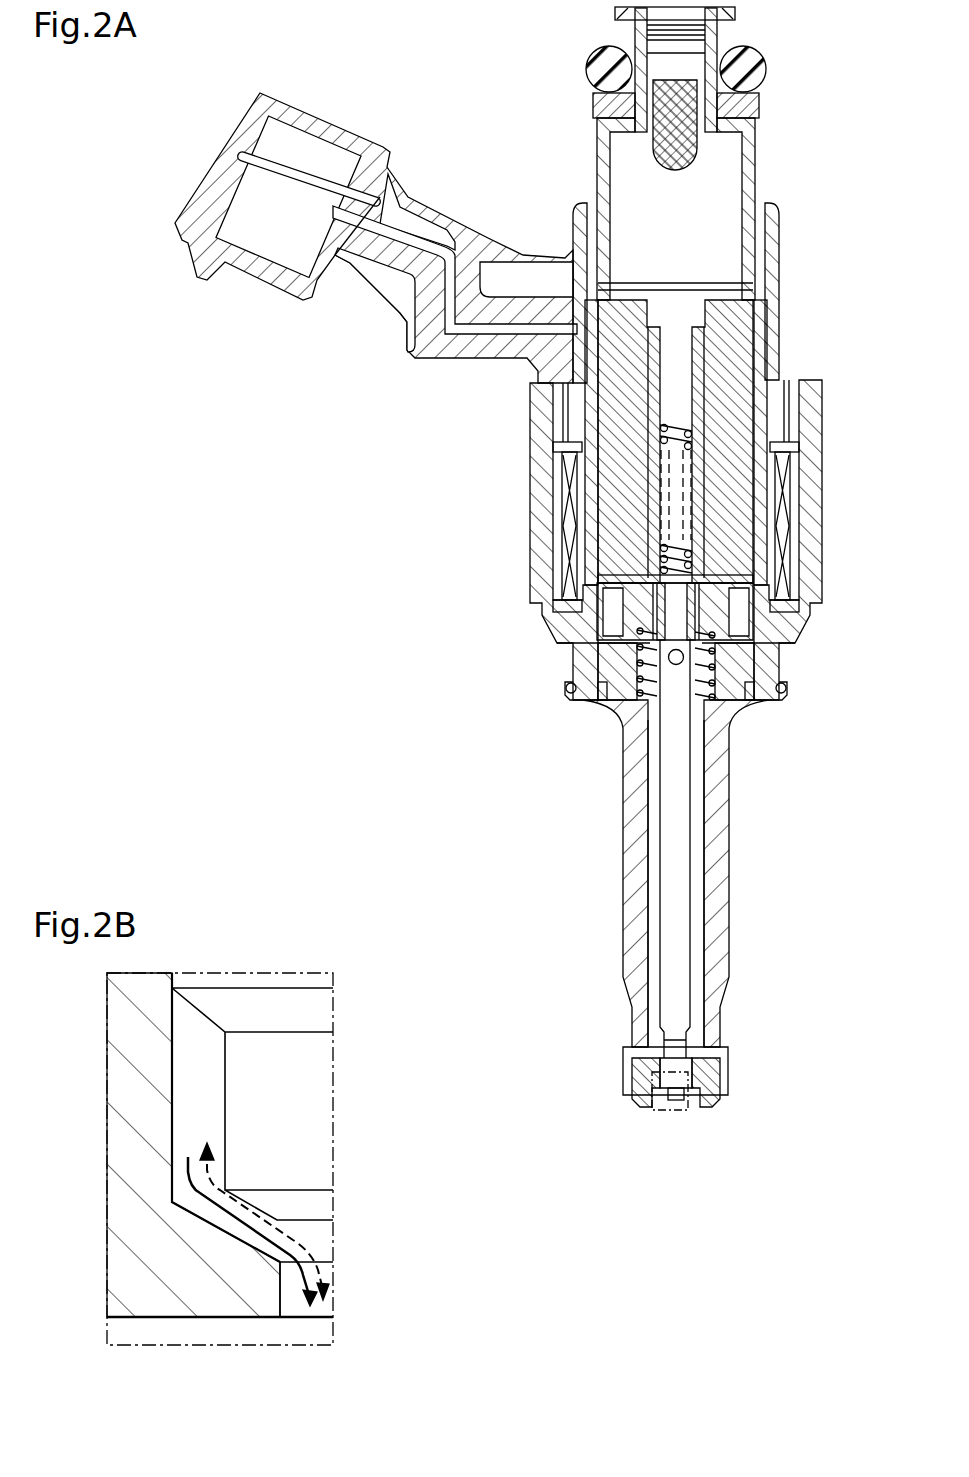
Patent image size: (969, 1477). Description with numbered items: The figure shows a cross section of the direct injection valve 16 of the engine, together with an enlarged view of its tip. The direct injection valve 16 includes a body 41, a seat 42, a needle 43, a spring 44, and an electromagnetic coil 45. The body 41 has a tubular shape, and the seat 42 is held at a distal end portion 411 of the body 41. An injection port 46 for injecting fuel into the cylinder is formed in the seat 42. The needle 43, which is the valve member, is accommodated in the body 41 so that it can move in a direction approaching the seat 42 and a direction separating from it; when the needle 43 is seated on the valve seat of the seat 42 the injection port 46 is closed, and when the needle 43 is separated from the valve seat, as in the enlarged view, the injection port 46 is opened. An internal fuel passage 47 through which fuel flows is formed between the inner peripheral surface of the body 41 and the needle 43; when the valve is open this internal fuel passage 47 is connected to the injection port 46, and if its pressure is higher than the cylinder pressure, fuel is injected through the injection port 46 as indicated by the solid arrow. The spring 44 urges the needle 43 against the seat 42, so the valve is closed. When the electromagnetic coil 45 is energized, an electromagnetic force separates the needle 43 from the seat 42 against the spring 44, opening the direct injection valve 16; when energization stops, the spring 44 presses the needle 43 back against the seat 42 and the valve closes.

In FIG. 2A, the direct injection valve 16 is at (533, 589).
In FIG. 2A, the body 41 is at (727, 768).
In FIG. 2A, the distal end portion 411 is at (622, 1090).
In FIG. 2A, the seat 42 is at (712, 1080).
In FIG. 2B, the seat 42 is at (126, 1135).
In FIG. 2A, the needle 43 is at (660, 933).
In FIG. 2A, the spring 44 is at (648, 548).
In FIG. 2A, the electromagnetic coil 45 is at (780, 463).
In FIG. 2A, the injection port 46 is at (677, 1105).
In FIG. 2B, the injection port 46 is at (283, 1295).
In FIG. 2A, the internal fuel passage 47 is at (698, 858).
In FIG. 2B, the internal fuel passage 47 is at (200, 1057).